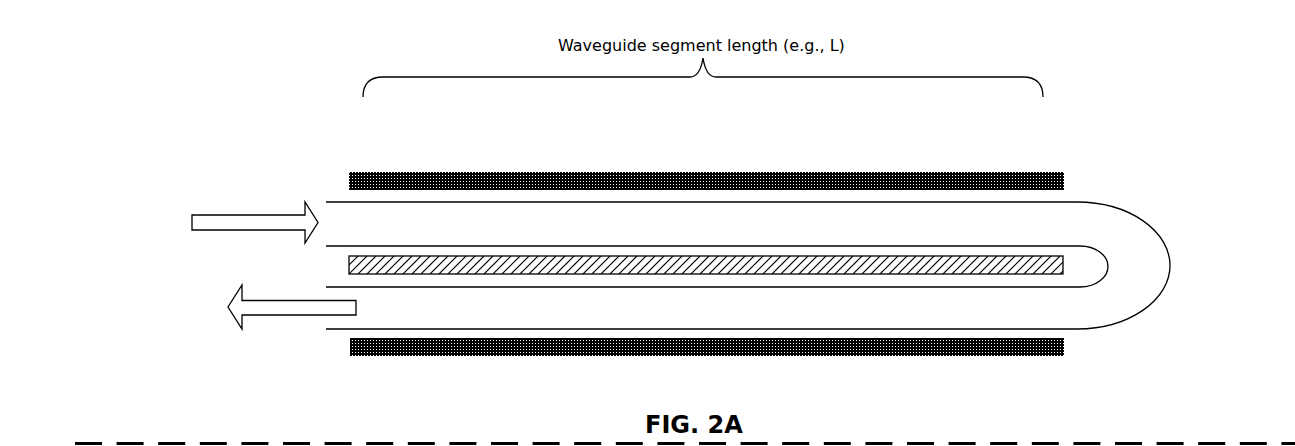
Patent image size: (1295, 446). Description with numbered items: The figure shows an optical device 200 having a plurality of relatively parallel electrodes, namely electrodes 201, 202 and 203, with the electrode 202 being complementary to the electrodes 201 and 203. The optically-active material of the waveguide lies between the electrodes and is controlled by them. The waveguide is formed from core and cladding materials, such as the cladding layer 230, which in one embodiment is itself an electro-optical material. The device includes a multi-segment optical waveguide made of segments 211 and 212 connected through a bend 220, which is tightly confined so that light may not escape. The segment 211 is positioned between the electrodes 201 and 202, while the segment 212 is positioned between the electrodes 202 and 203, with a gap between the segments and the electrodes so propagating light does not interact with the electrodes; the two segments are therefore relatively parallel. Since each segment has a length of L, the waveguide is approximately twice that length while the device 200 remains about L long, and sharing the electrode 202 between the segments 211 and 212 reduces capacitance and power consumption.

The optical device 200 is at (1253, 390).
The electrode 201 is at (1010, 175).
The electrode 202 is at (1035, 260).
The electrode 203 is at (1017, 357).
The waveguide segment 211 is at (463, 222).
The waveguide segment 212 is at (450, 310).
The bend 220 is at (1132, 280).
The cladding layer 230 is at (348, 202).